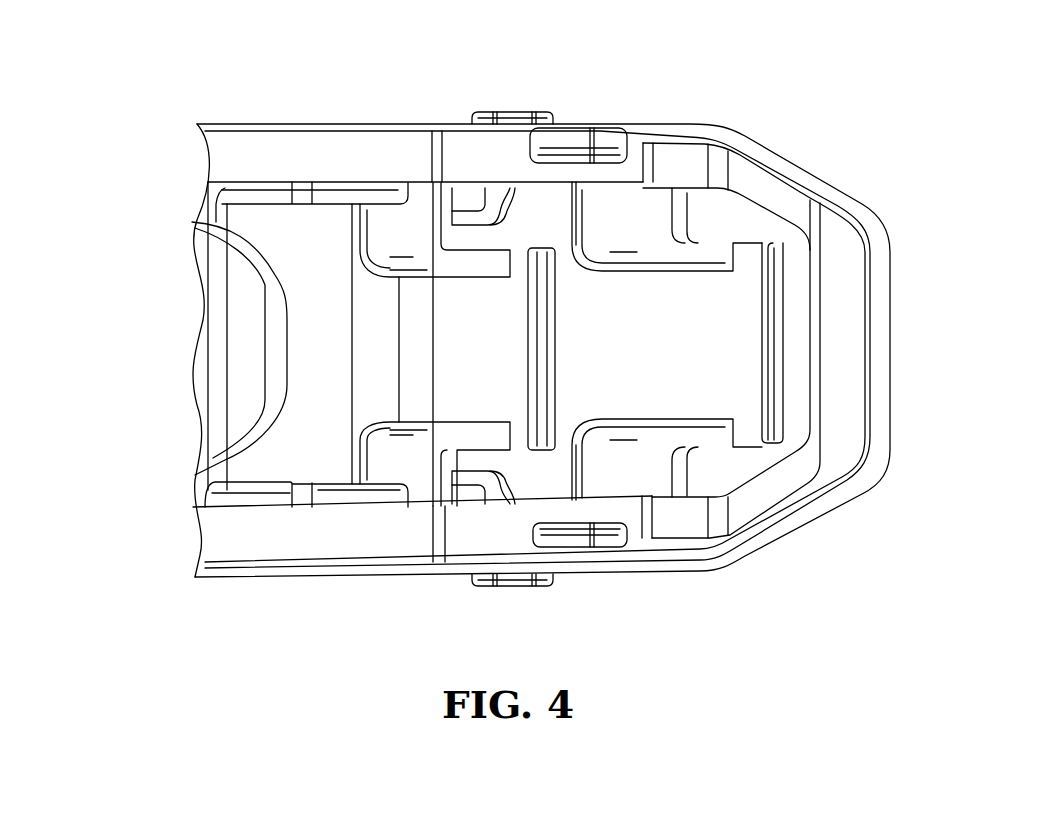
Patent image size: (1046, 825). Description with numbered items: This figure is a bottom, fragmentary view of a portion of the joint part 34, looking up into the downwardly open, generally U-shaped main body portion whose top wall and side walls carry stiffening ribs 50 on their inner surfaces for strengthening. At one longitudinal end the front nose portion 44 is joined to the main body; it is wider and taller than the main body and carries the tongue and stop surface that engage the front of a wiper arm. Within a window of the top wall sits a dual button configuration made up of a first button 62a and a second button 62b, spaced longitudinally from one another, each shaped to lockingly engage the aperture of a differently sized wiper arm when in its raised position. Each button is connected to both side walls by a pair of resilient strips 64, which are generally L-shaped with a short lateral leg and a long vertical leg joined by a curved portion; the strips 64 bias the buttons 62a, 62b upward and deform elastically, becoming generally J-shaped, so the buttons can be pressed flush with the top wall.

The joint part 34 is at (131, 397).
The front nose portion 44 is at (710, 122).
The stiffening ribs 50 is at (262, 235).
The first button 62a is at (457, 352).
The second button 62b is at (680, 347).
The resilient strips 64 is at (412, 263).